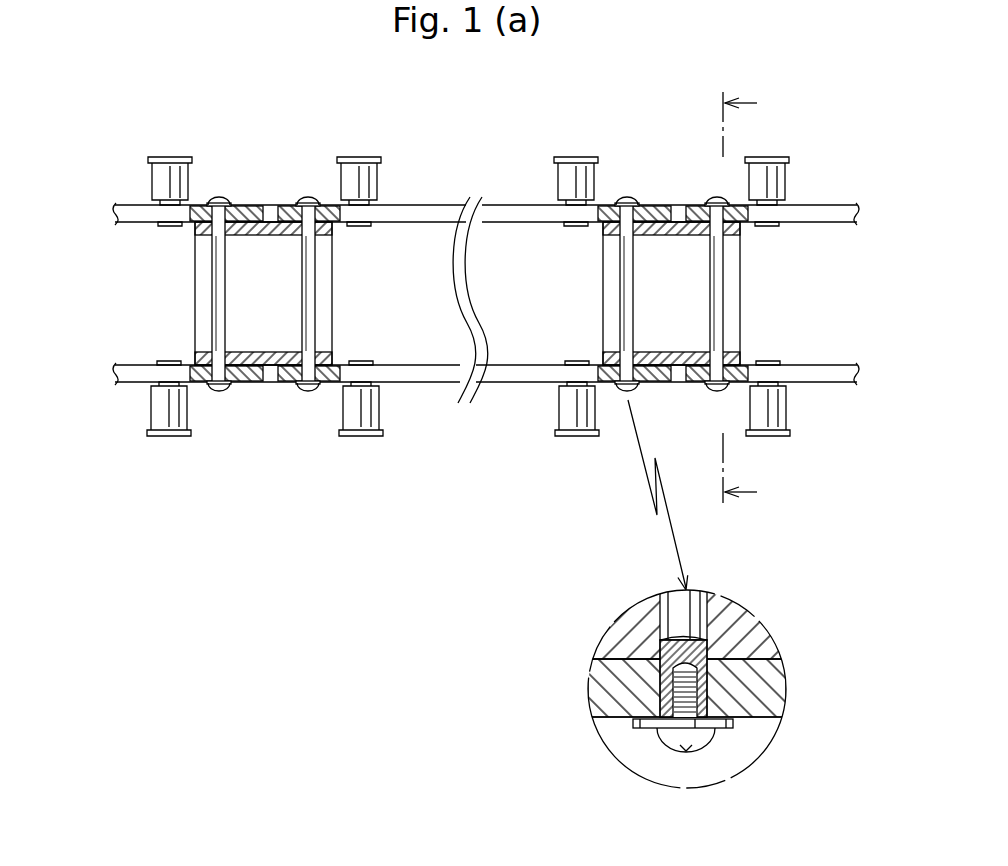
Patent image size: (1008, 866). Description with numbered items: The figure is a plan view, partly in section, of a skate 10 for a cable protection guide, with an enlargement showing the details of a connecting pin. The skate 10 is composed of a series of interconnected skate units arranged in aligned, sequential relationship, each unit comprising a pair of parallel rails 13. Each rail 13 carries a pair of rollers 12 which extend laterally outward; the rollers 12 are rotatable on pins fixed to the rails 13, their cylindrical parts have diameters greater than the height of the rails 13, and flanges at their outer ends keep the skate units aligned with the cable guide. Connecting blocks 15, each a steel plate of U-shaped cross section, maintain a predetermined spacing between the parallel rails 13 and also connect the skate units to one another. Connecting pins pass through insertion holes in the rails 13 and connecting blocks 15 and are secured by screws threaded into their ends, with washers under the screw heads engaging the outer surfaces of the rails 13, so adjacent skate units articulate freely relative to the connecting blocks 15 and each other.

The skate 10 is at (465, 453).
The roller 12 is at (158, 177).
The rail 13 is at (440, 212).
The connecting block 15 is at (203, 294).